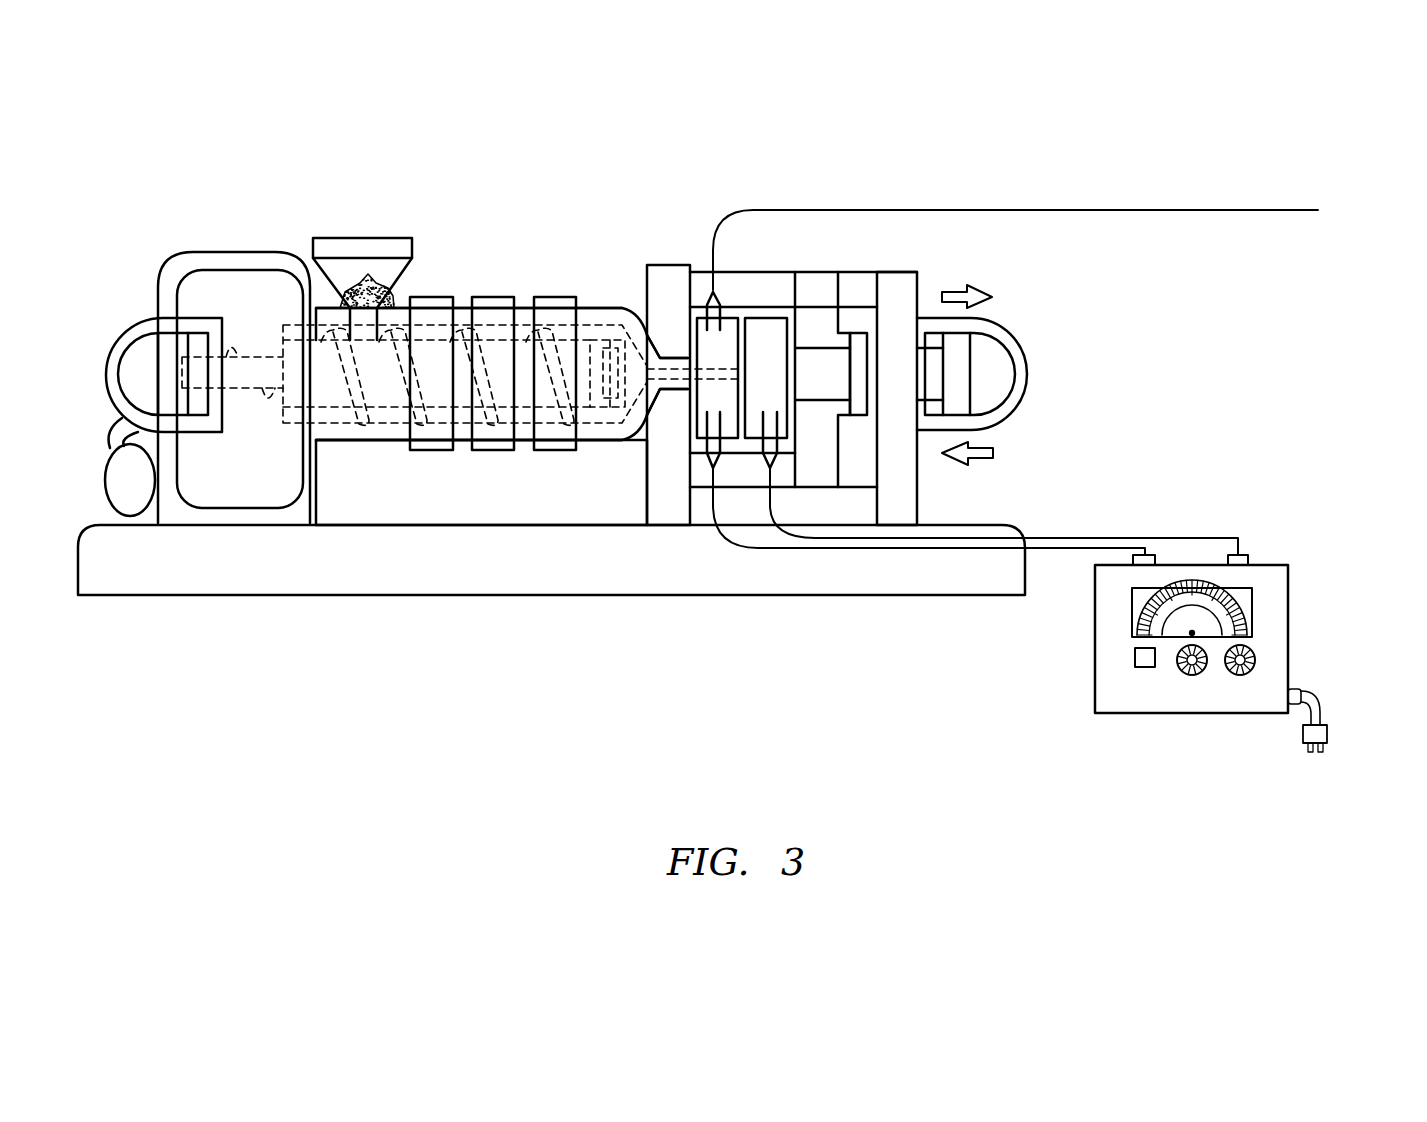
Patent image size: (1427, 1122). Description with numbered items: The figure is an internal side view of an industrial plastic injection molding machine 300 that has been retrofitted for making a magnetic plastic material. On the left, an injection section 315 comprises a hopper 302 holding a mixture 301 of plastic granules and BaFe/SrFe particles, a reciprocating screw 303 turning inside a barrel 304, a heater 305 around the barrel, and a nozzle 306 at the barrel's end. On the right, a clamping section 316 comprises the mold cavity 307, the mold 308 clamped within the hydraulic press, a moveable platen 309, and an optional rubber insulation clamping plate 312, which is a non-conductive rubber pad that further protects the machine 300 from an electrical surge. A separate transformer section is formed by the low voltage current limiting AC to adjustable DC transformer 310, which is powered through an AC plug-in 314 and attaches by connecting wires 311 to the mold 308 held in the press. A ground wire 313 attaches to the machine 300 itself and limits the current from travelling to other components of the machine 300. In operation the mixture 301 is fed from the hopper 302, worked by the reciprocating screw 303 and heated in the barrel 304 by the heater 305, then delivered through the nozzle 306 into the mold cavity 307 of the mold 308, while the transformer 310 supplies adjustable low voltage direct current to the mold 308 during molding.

The industrial plastic injection molding machine 300 is at (195, 107).
The mixture of plastic granules and BaFe/SrFe particles 301 is at (352, 277).
The hopper 302 is at (387, 237).
The reciprocating screw 303 is at (363, 420).
The barrel 304 is at (390, 432).
The heater 305 is at (553, 297).
The nozzle 306 is at (673, 393).
The mold cavity 307 is at (708, 365).
The mold 308 is at (767, 330).
The moveable platen 309 is at (808, 382).
The low voltage current limiting AC to adjustable DC transformer 310 is at (1300, 660).
The connecting wires 311 is at (1120, 538).
The rubber insulation clamping plate 312 is at (800, 326).
The ground wire 313 is at (1098, 208).
The AC plug-in 314 is at (1302, 732).
The injection section 315 is at (78, 647).
The clamping section 316 is at (1025, 647).